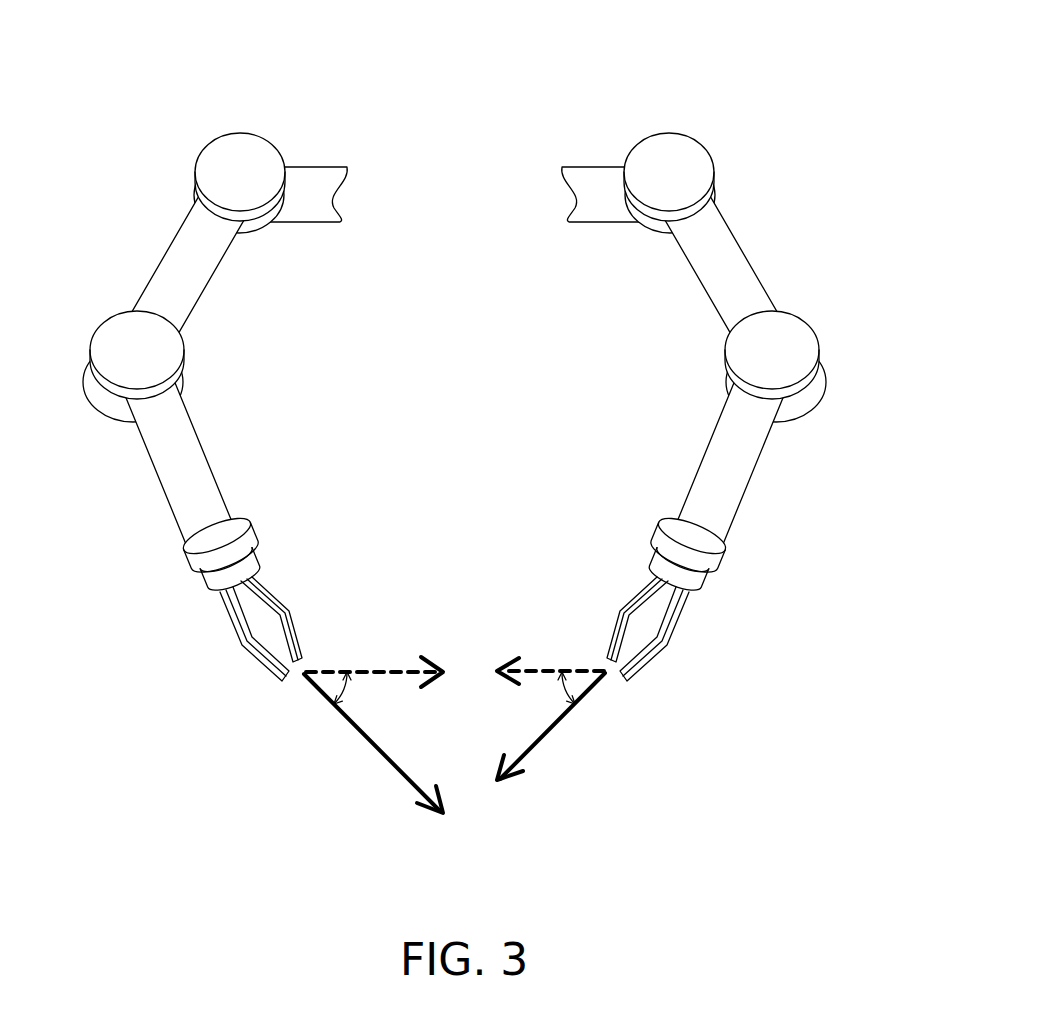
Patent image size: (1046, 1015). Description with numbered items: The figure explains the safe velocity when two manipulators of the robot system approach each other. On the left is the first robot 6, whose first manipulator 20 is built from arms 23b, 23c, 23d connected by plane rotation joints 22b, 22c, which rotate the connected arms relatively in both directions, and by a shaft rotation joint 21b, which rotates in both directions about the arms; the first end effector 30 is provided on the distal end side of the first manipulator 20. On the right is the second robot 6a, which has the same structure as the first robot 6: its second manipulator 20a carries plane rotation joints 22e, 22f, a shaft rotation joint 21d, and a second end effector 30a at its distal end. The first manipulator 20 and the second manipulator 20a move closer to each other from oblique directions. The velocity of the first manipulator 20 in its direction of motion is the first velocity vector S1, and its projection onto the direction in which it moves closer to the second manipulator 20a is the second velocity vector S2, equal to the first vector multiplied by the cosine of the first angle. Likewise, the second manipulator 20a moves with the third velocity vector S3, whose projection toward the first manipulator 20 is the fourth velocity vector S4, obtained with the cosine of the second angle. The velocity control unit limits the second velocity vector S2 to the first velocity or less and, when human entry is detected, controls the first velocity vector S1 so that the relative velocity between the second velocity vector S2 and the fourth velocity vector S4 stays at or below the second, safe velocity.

The first robot 6 is at (148, 106).
The second robot 6a is at (777, 108).
The first manipulator 20 is at (152, 226).
The second manipulator 20a is at (779, 247).
The plane rotation joint 22b is at (243, 153).
The plane rotation joint 22c is at (114, 342).
The plane rotation joint 22e is at (663, 163).
The plane rotation joint 22f is at (790, 342).
The arm 23b is at (322, 188).
The arm 23c is at (192, 298).
The arm 23d is at (197, 463).
The shaft rotation joint 21b is at (199, 555).
The shaft rotation joint 21d is at (713, 555).
The first end effector 30 is at (241, 640).
The second end effector 30a is at (662, 642).
The first velocity vector S1 is at (370, 743).
The second velocity vector S2 is at (380, 667).
The third velocity vector S3 is at (542, 738).
The fourth velocity vector S4 is at (570, 668).